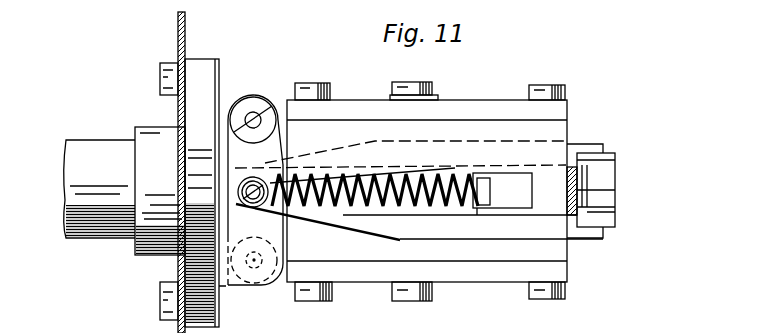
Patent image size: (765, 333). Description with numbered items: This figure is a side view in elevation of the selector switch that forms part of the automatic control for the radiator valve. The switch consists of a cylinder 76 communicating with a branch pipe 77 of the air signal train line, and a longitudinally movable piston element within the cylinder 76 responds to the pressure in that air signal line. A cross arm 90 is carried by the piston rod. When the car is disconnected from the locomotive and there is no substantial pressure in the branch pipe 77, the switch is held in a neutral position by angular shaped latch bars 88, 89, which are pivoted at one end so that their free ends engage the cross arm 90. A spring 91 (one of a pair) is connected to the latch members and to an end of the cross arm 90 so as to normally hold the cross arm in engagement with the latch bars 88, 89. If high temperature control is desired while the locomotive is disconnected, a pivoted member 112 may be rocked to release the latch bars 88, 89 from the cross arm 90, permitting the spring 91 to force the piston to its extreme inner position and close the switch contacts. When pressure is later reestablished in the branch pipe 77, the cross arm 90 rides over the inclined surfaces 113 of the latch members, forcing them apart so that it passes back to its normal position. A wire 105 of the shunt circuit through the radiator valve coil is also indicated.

The branch pipe 77 is at (68, 205).
The cylinder 76 is at (163, 230).
The latch bar 89 is at (462, 141).
The inclined surface 113 is at (470, 167).
The pivoted member 112 is at (583, 183).
The cross arm 90 is at (492, 192).
The latch bar 88 is at (502, 227).
The wire 105 is at (463, 205).
The spring 91 is at (362, 206).